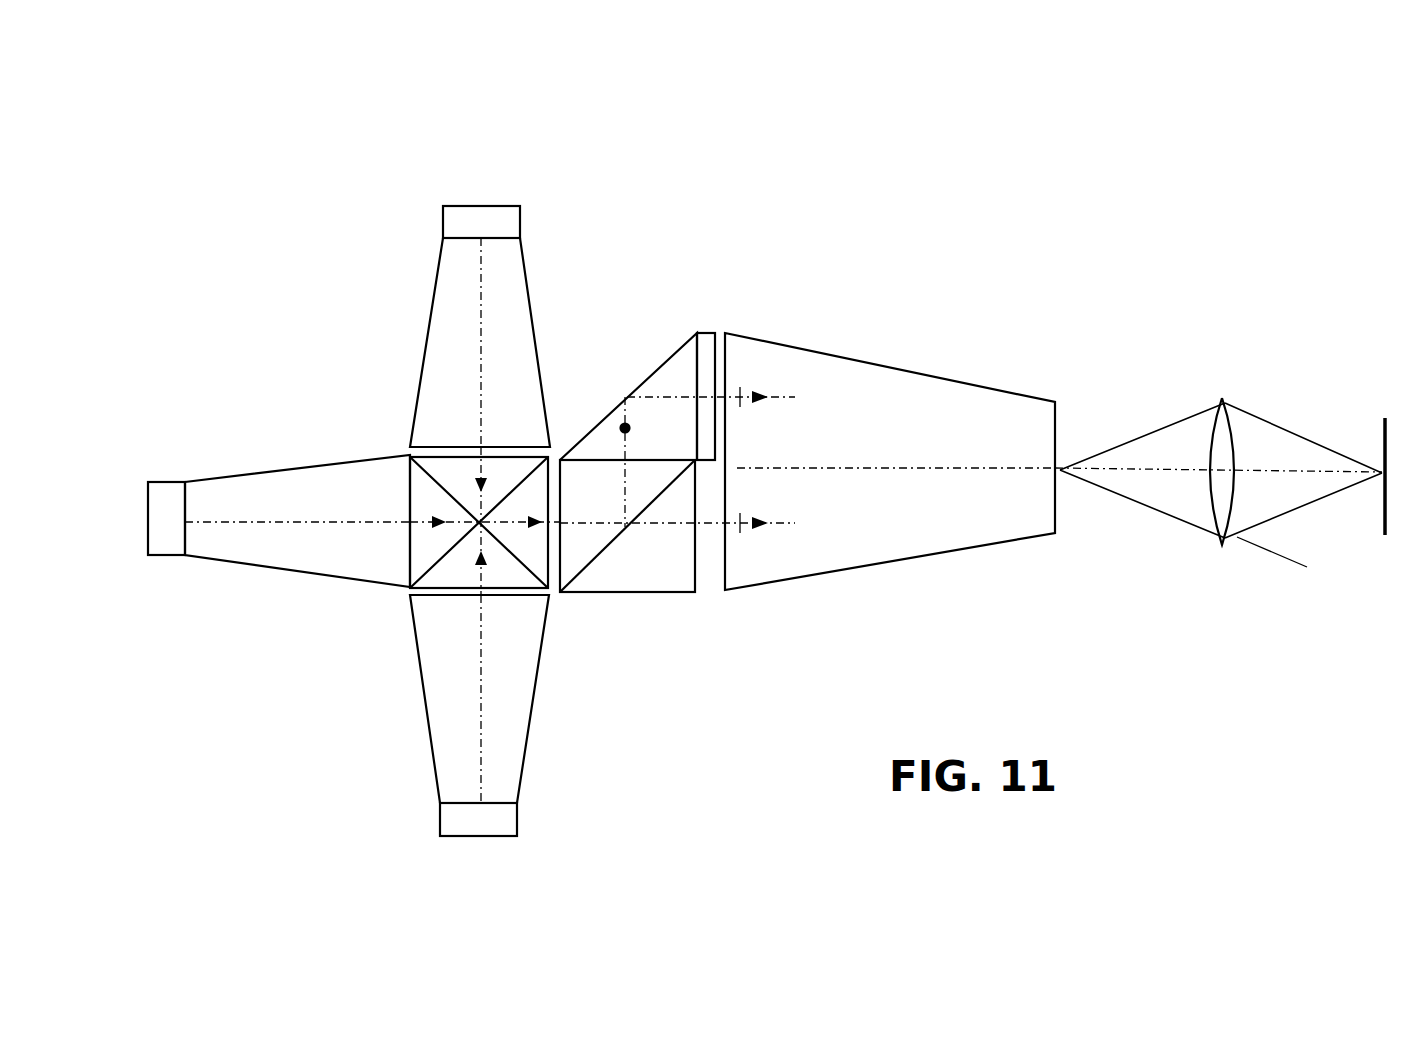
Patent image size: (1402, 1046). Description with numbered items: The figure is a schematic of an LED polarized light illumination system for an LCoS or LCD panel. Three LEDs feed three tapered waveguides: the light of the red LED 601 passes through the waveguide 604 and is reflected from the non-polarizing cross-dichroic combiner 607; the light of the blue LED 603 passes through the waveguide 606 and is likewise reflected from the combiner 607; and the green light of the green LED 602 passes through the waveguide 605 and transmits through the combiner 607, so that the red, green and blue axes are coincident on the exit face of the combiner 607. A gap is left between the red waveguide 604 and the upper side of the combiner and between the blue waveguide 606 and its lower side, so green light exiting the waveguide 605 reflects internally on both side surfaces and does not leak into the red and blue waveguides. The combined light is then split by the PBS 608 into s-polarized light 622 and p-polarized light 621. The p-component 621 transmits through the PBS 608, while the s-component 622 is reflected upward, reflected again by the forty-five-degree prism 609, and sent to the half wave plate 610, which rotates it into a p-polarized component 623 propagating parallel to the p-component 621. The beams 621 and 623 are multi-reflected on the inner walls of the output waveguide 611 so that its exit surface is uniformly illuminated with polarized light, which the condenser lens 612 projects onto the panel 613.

The red LED 601 is at (460, 222).
The green LED 602 is at (167, 535).
The blue LED 603 is at (468, 822).
The tapered waveguide 604 is at (448, 378).
The tapered waveguide 605 is at (293, 547).
The tapered waveguide 606 is at (518, 703).
The non-polarizing cross-dichroic combiner 607 is at (560, 597).
The PBS 608 is at (663, 573).
The 45-degree prism 609 is at (662, 393).
The half wave plate 610 is at (704, 373).
The output waveguide 611 is at (977, 530).
The condenser lens 612 is at (1220, 420).
The panel 613 is at (1382, 437).
The p-polarized light 621 is at (740, 532).
The s-polarized light 622 is at (622, 427).
The p-polarized component 623 is at (747, 383).